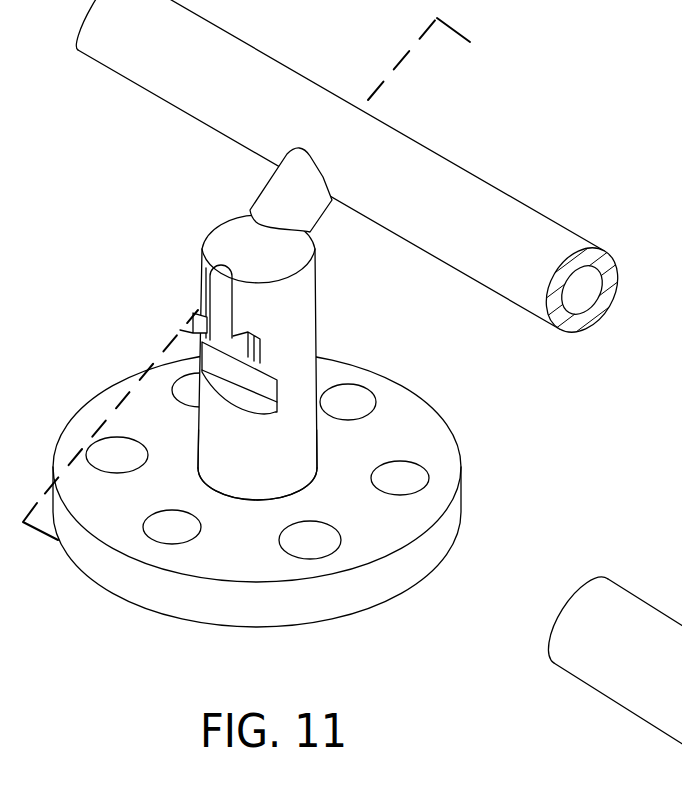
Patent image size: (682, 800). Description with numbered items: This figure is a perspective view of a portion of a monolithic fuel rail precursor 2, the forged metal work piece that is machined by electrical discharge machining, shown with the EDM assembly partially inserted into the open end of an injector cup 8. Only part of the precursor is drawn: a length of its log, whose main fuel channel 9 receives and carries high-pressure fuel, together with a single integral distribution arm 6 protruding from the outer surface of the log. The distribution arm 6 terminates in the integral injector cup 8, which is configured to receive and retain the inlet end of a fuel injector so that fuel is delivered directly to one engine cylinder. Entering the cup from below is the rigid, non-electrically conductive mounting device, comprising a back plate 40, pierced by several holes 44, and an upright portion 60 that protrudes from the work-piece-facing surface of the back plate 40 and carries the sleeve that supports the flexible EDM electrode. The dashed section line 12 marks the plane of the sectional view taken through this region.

The fuel rail precursor 2 is at (287, 68).
The distribution arm 6 is at (278, 193).
The injector cup 8 is at (302, 305).
The main fuel channel 9 is at (580, 300).
The section line 12 is at (264, 291).
The back plate 40 is at (440, 423).
The mounting holes 44 is at (428, 473).
The upright portion 60 is at (252, 492).